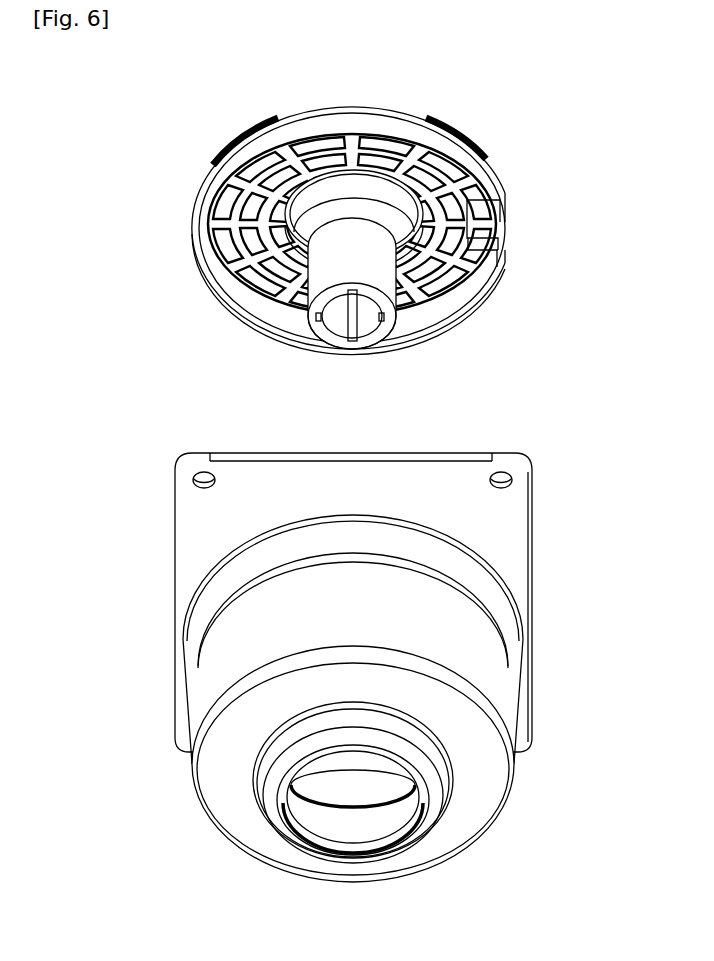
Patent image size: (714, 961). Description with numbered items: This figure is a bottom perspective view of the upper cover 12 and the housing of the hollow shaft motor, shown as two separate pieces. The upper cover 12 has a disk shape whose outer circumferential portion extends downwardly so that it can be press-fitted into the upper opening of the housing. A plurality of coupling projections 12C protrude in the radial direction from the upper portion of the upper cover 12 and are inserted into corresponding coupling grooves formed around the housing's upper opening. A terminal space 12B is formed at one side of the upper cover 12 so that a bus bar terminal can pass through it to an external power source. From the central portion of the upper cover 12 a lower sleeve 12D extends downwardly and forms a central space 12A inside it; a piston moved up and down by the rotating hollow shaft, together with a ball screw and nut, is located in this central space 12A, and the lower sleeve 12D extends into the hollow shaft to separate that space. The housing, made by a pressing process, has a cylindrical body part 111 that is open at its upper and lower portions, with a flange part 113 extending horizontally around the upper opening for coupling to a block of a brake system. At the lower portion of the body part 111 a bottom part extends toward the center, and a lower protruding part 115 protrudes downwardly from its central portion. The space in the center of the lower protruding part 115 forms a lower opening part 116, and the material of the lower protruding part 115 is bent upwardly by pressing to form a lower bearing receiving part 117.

The upper cover 12 is at (186, 146).
The central space 12A is at (372, 318).
The terminal space 12B is at (485, 217).
The coupling projections 12C is at (470, 136).
The lower sleeve 12D is at (270, 282).
The body part 111 is at (217, 672).
The flange part 113 is at (200, 522).
The lower protruding part 115 is at (280, 833).
The lower opening part 116 is at (372, 836).
The lower bearing receiving part 117 is at (410, 797).